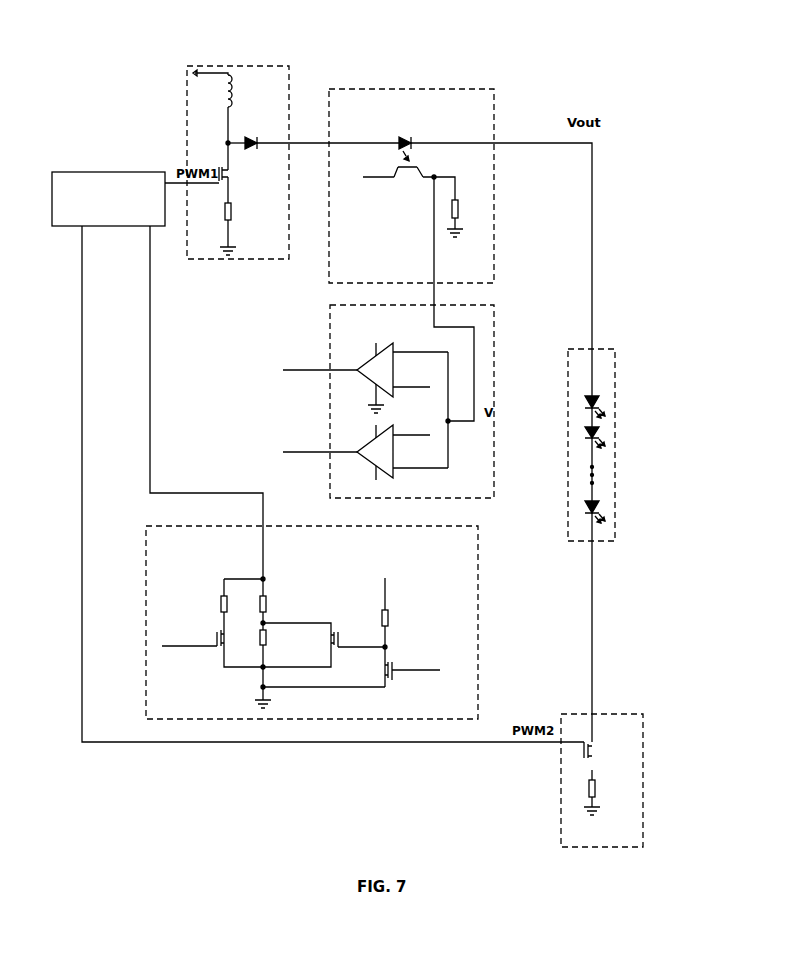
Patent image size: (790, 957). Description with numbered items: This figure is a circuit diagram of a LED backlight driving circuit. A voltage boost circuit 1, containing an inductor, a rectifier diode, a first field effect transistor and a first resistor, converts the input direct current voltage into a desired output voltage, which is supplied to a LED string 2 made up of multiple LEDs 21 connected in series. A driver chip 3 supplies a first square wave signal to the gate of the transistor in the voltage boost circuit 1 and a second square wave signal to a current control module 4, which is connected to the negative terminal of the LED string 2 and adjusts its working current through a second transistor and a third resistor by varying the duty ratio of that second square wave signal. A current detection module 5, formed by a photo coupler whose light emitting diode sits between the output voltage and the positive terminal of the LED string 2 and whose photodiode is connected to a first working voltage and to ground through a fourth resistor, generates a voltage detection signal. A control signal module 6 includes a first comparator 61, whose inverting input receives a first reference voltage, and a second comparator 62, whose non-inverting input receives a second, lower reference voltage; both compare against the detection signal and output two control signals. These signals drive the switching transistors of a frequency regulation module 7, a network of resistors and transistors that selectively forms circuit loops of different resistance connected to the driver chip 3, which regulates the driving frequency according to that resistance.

The voltage boost circuit 1 is at (248, 66).
The LED string 2 is at (616, 420).
The LEDs 21 is at (600, 403).
The driver chip 3 is at (53, 170).
The current control module 4 is at (644, 779).
The current detection module 5 is at (417, 88).
The control signal module 6 is at (411, 401).
The first comparator 61 is at (402, 378).
The second comparator 62 is at (402, 450).
The frequency regulation module 7 is at (479, 630).